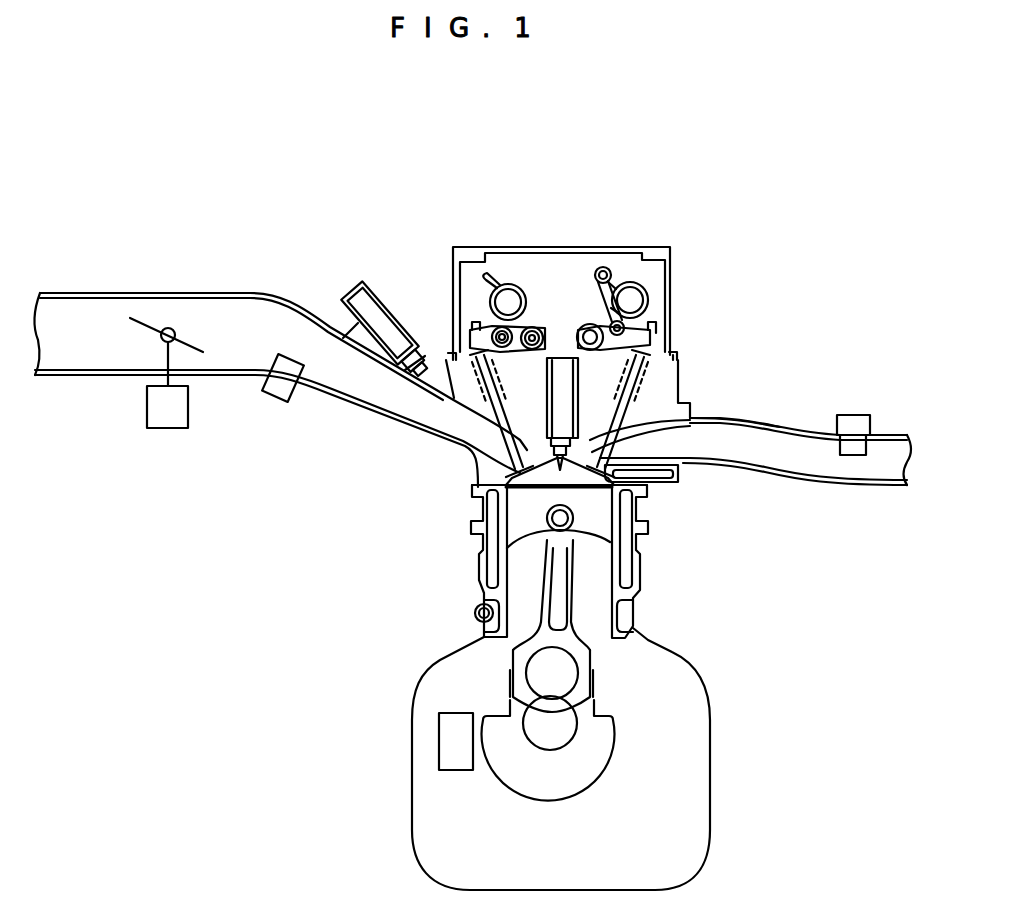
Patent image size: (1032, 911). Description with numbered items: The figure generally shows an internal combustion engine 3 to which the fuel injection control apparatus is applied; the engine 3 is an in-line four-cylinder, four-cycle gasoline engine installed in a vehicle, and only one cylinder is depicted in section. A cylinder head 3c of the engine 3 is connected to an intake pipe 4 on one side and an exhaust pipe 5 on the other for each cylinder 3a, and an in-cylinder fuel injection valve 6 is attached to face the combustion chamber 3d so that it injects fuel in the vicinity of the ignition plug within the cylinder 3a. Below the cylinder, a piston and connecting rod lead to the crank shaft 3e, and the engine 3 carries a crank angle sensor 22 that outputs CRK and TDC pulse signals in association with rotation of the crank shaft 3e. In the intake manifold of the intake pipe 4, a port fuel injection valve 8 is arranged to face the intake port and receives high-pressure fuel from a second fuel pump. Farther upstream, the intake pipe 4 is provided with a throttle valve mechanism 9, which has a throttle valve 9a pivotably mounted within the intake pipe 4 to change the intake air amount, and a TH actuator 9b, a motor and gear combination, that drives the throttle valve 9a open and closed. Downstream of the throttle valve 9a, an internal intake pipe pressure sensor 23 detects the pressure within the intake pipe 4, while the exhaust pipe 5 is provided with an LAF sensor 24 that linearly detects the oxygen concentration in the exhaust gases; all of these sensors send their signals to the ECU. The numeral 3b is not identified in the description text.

The internal combustion engine 3 is at (668, 228).
The cylinder 3a is at (517, 577).
The cylinder 3b is at (523, 512).
The cylinder head 3c is at (680, 374).
The combustion chamber 3d is at (567, 478).
The crank shaft 3e is at (568, 742).
The intake pipe 4 is at (88, 376).
The exhaust pipe 5 is at (877, 487).
The in-cylinder fuel injection valve 6 is at (562, 357).
The port fuel injection valve 8 is at (383, 290).
The throttle valve mechanism 9 is at (705, 417).
The throttle valve 9a is at (158, 329).
The TH actuator 9b is at (168, 428).
The crank angle sensor 22 is at (437, 748).
The internal intake pipe pressure sensor 23 is at (278, 398).
The LAF sensor 24 is at (855, 415).